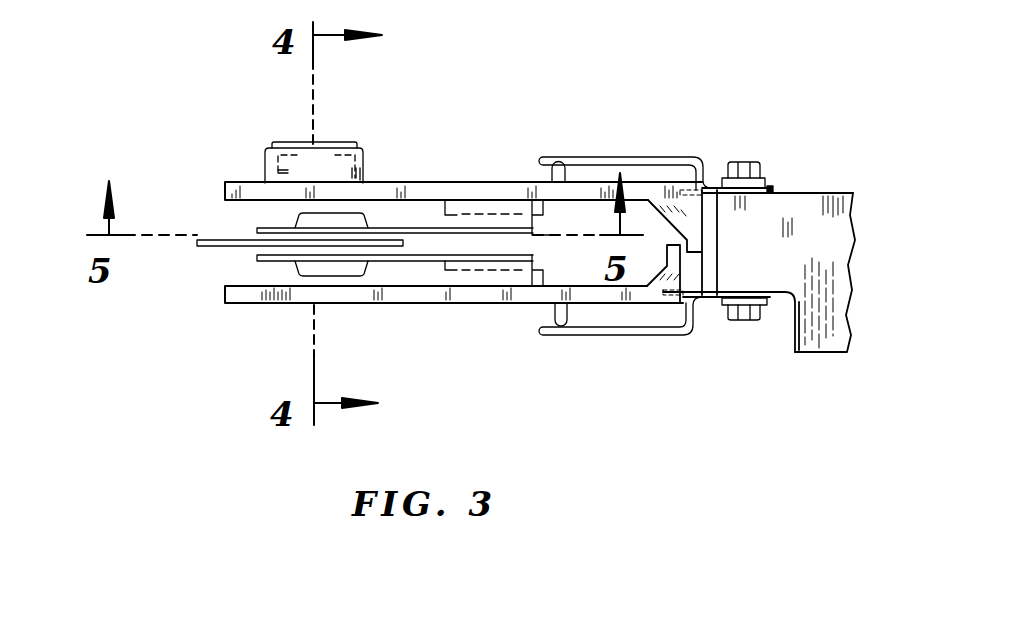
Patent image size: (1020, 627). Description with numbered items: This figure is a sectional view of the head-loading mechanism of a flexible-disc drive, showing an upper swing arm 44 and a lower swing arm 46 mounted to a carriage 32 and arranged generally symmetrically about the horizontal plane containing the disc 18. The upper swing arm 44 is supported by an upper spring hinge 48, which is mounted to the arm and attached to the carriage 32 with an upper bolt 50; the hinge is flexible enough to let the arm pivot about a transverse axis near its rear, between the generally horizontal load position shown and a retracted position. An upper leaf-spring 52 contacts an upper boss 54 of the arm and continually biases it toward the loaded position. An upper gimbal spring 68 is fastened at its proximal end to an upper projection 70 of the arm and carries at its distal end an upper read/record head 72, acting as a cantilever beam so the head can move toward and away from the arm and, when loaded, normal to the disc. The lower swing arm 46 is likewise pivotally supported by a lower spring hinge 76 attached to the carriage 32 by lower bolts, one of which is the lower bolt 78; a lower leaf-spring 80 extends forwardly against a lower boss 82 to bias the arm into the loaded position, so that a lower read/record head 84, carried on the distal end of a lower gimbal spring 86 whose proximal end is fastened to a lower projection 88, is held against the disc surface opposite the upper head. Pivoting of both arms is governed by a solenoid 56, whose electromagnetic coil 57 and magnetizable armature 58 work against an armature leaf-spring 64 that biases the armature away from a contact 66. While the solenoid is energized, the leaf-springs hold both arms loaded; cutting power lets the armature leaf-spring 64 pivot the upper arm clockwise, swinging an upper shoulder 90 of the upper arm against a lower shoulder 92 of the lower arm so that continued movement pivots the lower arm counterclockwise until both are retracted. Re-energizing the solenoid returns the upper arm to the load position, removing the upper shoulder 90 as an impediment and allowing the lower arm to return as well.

The disc 18 is at (208, 246).
The carriage 32 is at (830, 240).
The upper swing arm 44 is at (463, 185).
The lower swing arm 46 is at (350, 307).
The upper spring hinge 48 is at (771, 190).
The upper bolt 50 is at (744, 162).
The upper leaf-spring 52 is at (615, 156).
The upper boss 54 is at (553, 182).
The solenoid 56 is at (343, 172).
The electromagnetic coil 57 is at (263, 162).
The armature 58 is at (365, 172).
The armature leaf-spring 64 is at (328, 143).
The contact 66 is at (310, 147).
The upper gimbal spring 68 is at (413, 227).
The upper projection 70 is at (543, 212).
The upper read/record head 72 is at (293, 235).
The lower spring hinge 76 is at (780, 300).
The lower bolt 78 is at (743, 321).
The lower leaf-spring 80 is at (613, 334).
The lower boss 82 is at (552, 316).
The lower read/record head 84 is at (292, 250).
The lower gimbal spring 86 is at (415, 262).
The lower projection 88 is at (498, 282).
The upper shoulder 90 is at (697, 252).
The lower shoulder 92 is at (672, 258).